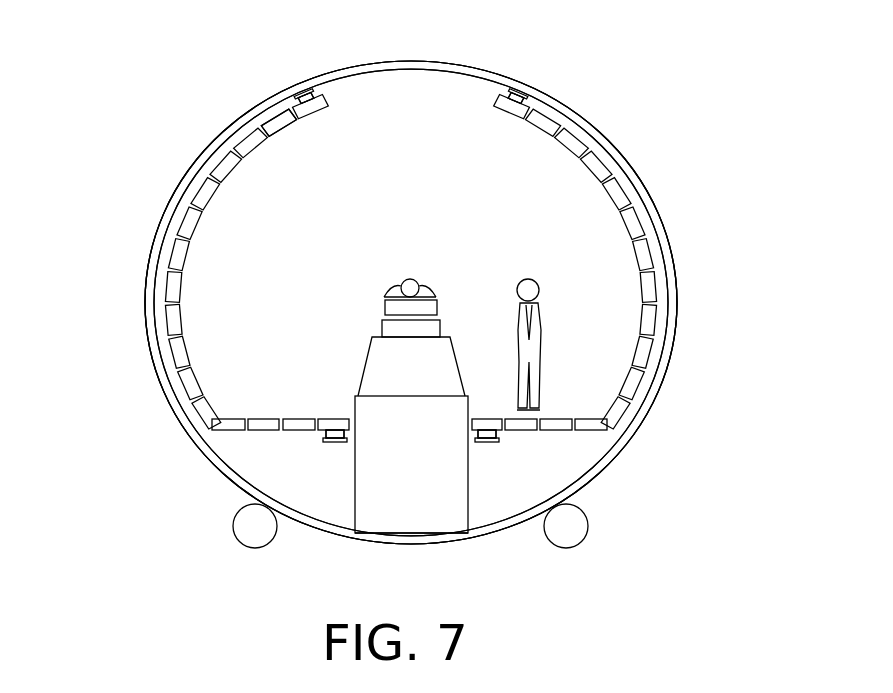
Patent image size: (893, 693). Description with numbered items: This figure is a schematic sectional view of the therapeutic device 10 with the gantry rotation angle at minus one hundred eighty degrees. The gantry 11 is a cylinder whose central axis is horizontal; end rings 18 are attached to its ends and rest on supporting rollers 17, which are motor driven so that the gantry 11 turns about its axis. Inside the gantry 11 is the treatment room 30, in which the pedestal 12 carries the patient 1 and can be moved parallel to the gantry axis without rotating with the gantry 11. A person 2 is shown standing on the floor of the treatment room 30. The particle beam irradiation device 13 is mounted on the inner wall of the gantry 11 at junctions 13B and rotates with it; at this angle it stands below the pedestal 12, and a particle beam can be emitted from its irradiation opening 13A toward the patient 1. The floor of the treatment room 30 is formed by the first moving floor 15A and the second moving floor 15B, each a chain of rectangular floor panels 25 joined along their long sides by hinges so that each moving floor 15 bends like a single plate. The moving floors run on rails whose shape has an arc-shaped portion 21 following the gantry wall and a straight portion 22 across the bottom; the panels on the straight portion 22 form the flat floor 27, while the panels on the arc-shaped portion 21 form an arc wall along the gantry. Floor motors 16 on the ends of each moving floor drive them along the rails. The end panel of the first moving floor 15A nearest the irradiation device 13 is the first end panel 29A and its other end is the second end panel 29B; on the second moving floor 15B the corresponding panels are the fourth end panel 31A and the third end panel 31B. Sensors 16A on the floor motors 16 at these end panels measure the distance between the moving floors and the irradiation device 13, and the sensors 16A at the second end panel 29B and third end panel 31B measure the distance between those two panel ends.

The patient 1 is at (421, 279).
The worker 2 is at (541, 333).
The therapeutic device 10 is at (634, 116).
The gantry 11 is at (397, 62).
The pedestal 12 is at (384, 308).
The particle beam irradiation device 13 is at (468, 489).
The irradiation opening 13A is at (382, 328).
The junction 13B is at (361, 538).
The moving floor 15 is at (409, 450).
The first moving floor 15A is at (172, 249).
The second moving floor 15B is at (637, 221).
The floor motor 16 is at (322, 94).
The sensor 16A is at (320, 85).
The supporting roller 17 is at (233, 526).
The end ring 18 is at (550, 96).
The arc-shaped portion 21 is at (172, 249).
The straight portion 22 is at (351, 440).
The floor panel 25 is at (280, 125).
The flat floor 27 is at (259, 419).
The first end panel 29A is at (335, 419).
The second end panel 29B is at (311, 118).
The treatment room 30 is at (428, 193).
The fourth end panel 31A is at (487, 418).
The third end panel 31B is at (512, 108).